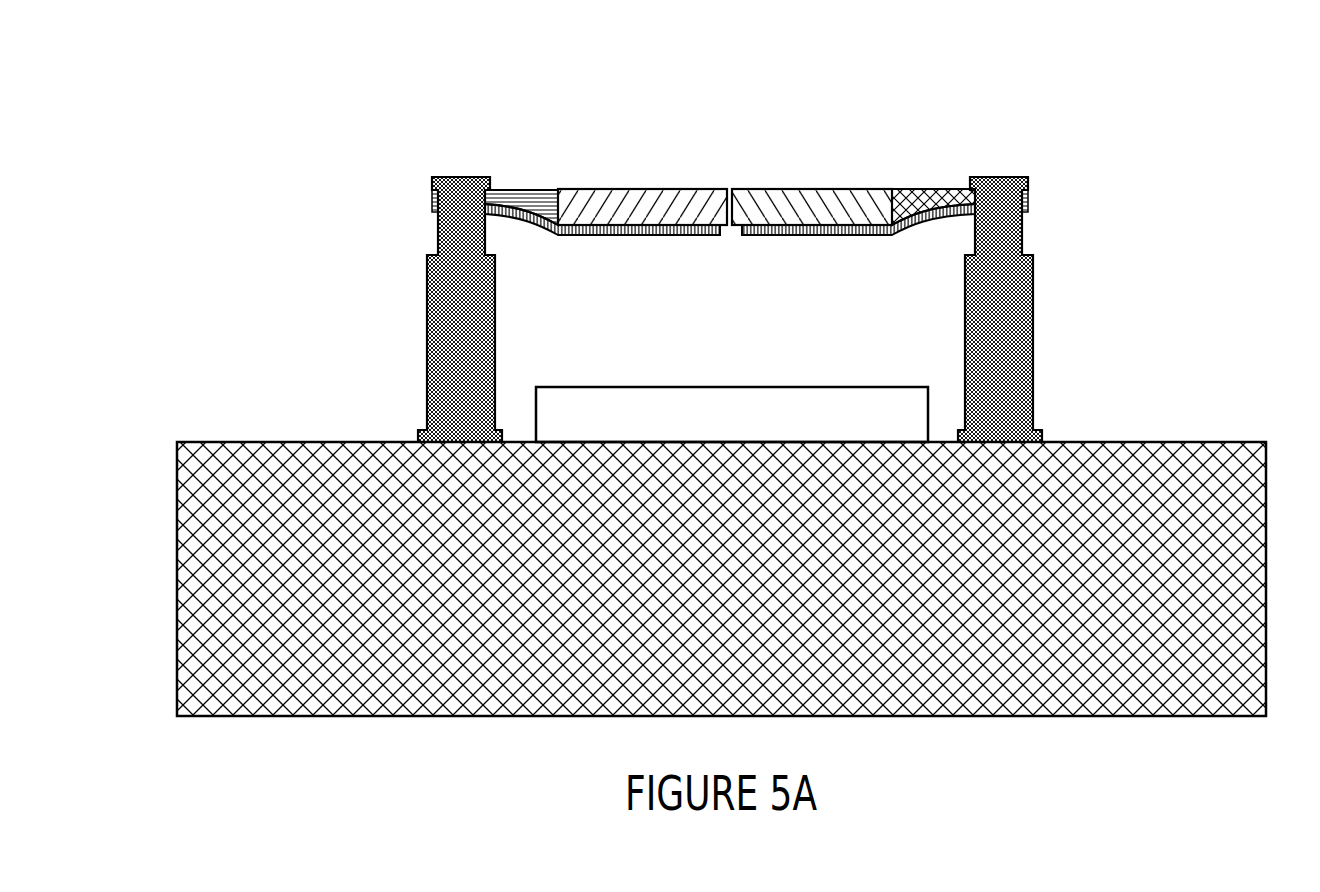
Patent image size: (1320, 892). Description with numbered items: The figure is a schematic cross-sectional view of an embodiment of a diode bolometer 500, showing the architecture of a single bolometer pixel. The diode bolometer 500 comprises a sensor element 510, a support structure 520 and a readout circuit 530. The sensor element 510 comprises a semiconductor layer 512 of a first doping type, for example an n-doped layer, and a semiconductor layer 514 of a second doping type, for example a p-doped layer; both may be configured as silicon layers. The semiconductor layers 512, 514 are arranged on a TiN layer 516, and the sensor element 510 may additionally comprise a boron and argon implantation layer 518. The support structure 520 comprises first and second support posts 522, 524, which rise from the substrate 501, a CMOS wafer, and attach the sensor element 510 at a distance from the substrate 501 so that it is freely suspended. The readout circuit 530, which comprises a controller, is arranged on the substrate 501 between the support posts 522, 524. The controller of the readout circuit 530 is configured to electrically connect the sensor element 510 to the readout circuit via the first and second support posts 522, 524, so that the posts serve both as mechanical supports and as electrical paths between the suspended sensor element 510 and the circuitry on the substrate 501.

The diode bolometer 500 is at (695, 385).
The substrate 501 is at (1163, 452).
The sensor element 510 is at (720, 188).
The semiconductor layer of a first doping type 512 is at (660, 202).
The semiconductor layer of a second doping type 514 is at (830, 197).
The TiN layer 516 is at (633, 237).
The boron and argon implantation layer 518 is at (920, 198).
The support structure 520 is at (378, 309).
The first support post 522 is at (427, 343).
The second support post 524 is at (1033, 330).
The readout circuit 530 is at (687, 387).